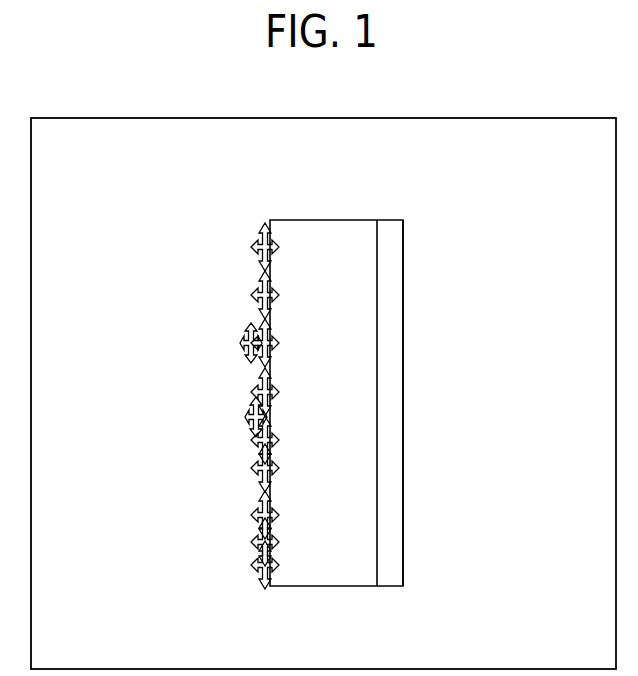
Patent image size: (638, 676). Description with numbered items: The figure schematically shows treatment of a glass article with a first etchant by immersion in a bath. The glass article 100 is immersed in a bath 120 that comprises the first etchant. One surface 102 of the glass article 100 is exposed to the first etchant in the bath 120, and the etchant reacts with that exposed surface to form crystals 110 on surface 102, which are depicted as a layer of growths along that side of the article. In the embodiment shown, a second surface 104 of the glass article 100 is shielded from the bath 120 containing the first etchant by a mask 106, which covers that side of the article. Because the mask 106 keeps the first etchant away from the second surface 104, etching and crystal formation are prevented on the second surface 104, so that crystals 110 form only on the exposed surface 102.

The glass article 100 is at (336, 403).
The surface 102 is at (277, 568).
The second surface 104 is at (380, 422).
The mask 106 is at (403, 352).
The crystals 110 is at (243, 533).
The bath 120 is at (323, 393).